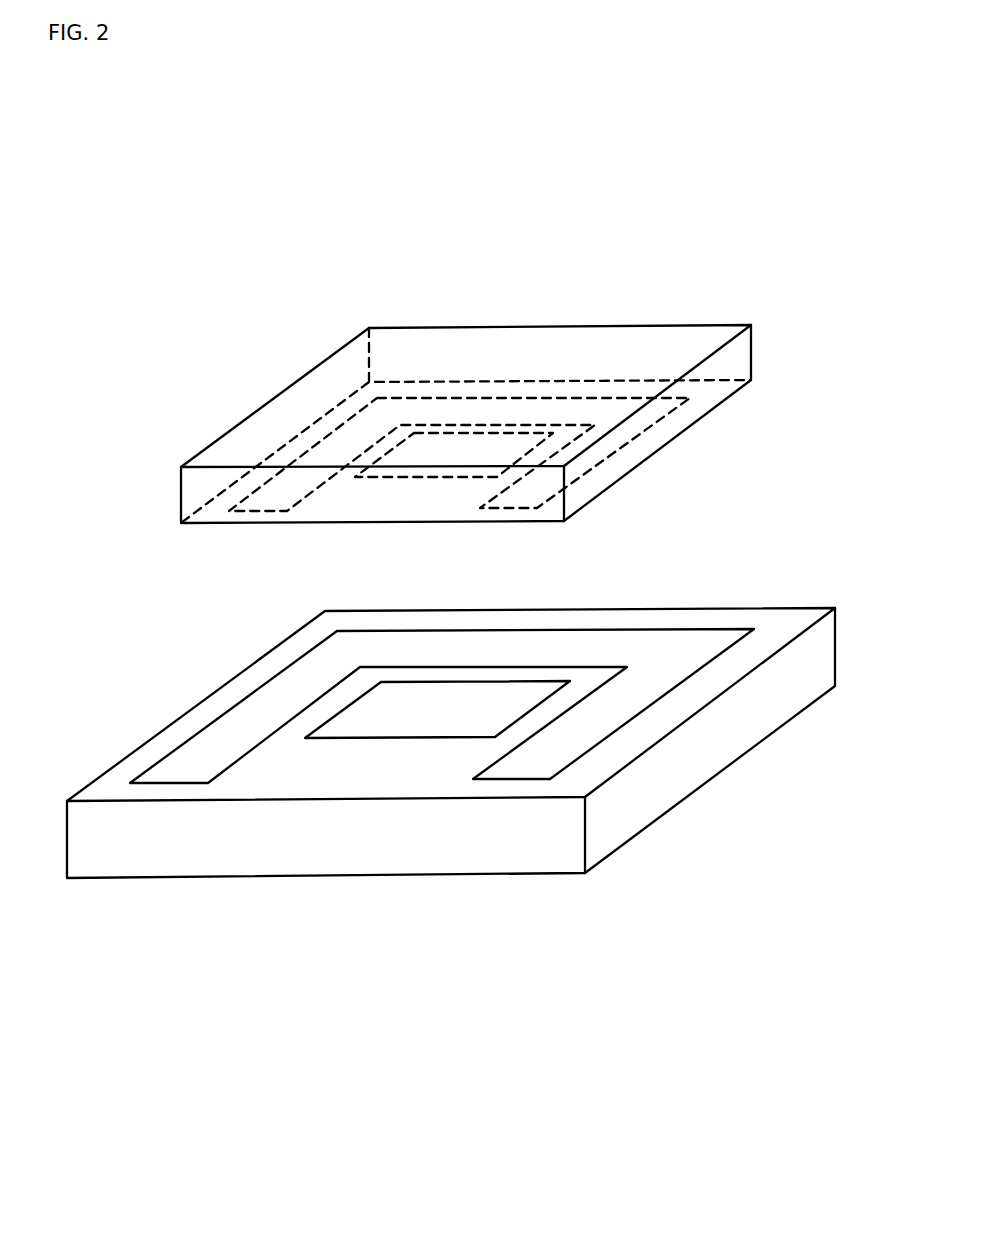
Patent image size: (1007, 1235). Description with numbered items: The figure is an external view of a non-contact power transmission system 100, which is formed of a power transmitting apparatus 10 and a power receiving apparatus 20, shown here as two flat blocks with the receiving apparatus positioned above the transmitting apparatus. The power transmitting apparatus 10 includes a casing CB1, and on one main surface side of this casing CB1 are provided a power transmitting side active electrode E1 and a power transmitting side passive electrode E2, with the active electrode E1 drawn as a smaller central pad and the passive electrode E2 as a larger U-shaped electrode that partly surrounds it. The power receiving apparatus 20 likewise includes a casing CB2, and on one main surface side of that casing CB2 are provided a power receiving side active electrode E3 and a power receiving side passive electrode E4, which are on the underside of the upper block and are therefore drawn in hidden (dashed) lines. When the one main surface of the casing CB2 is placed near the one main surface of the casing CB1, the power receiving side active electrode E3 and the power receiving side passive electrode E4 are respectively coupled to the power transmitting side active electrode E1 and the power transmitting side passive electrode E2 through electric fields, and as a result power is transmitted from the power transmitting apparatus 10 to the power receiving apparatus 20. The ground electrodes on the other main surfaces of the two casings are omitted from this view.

The non-contact power transmission system 100 is at (132, 241).
The power transmitting apparatus 10 is at (253, 898).
The power receiving apparatus 20 is at (562, 311).
The casing CB1 is at (735, 745).
The casing CB2 is at (707, 397).
The power transmitting side active electrode E1 is at (372, 713).
The power transmitting side passive electrode E2 is at (678, 647).
The power receiving side active electrode E3 is at (483, 459).
The power receiving side passive electrode E4 is at (277, 497).